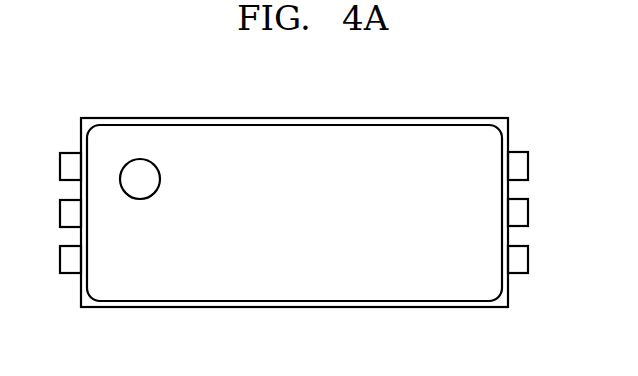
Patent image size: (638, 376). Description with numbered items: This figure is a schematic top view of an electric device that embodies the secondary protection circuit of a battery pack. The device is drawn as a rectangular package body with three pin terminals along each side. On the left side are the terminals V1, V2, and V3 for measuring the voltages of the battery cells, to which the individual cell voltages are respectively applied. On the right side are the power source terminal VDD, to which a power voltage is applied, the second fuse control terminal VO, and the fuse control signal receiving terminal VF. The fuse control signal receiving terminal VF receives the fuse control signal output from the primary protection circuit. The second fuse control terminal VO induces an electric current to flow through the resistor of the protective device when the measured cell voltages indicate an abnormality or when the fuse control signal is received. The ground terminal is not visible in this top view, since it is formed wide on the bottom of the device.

The terminal for measuring the voltage of a battery cell V1 is at (51, 259).
The terminal for measuring the voltage of a battery cell V2 is at (51, 215).
The terminal for measuring the voltage of a battery cell V3 is at (51, 167).
The power source terminal VDD is at (544, 166).
The second fuse control terminal VO is at (537, 213).
The fuse control signal receiving terminal VF is at (536, 259).